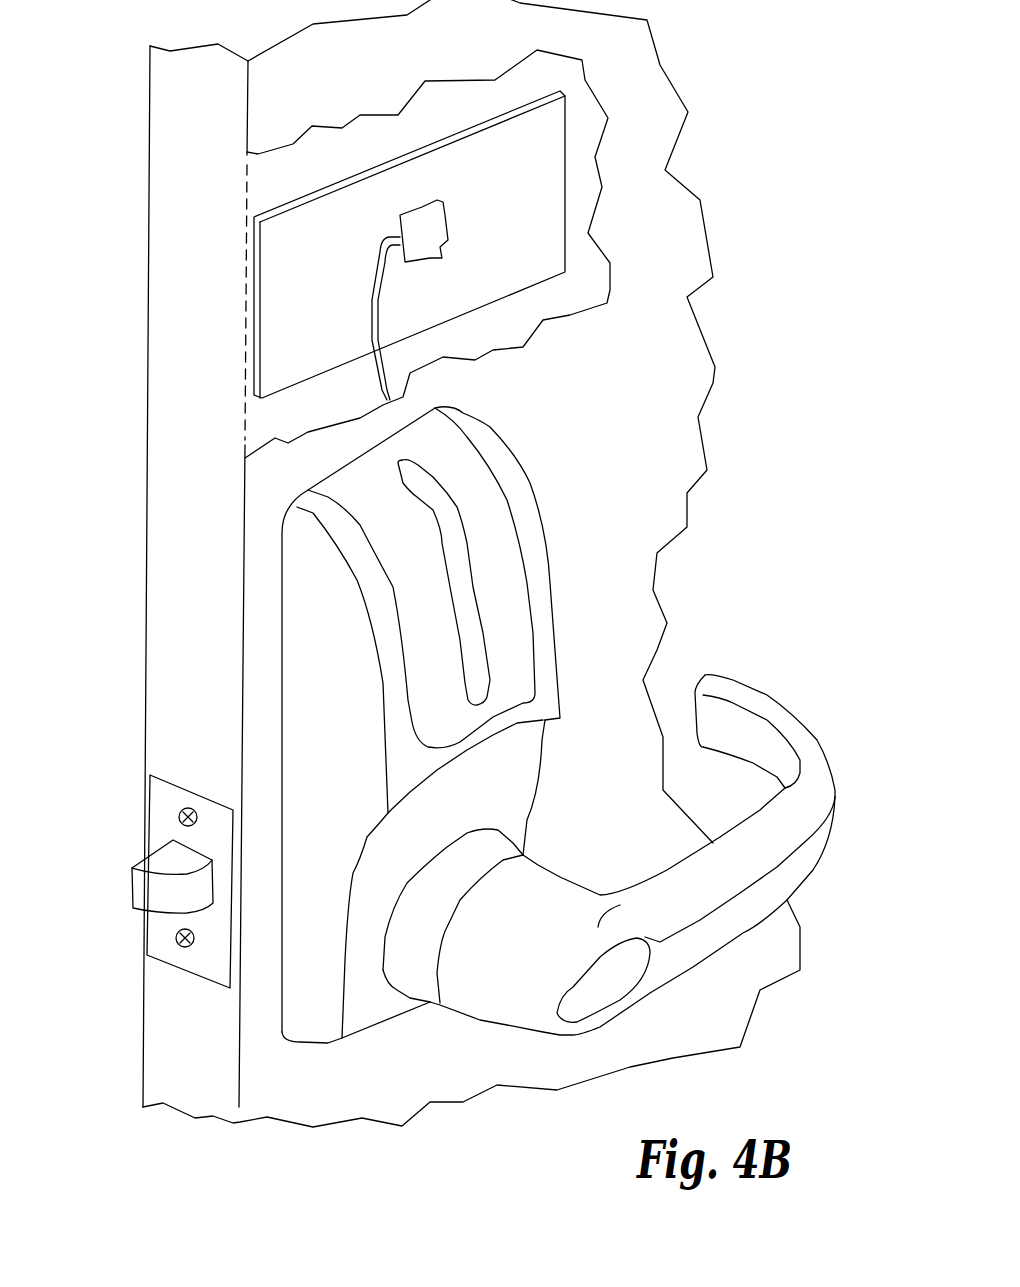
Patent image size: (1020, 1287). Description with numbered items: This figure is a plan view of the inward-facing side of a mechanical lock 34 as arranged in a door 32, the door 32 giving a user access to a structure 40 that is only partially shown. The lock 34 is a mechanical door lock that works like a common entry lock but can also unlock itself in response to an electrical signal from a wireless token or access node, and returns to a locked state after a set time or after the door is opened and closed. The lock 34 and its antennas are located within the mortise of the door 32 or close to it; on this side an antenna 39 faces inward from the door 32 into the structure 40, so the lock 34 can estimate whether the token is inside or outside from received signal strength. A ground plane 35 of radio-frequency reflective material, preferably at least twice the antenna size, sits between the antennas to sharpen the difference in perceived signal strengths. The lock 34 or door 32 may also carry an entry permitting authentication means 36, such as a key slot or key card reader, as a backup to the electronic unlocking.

The door 32 is at (213, 118).
The mechanical lock 34 is at (131, 888).
The ground plane 35 is at (307, 266).
The entry permitting authentication means 36 is at (440, 496).
The antenna 39 is at (428, 231).
The structure 40 is at (455, 692).